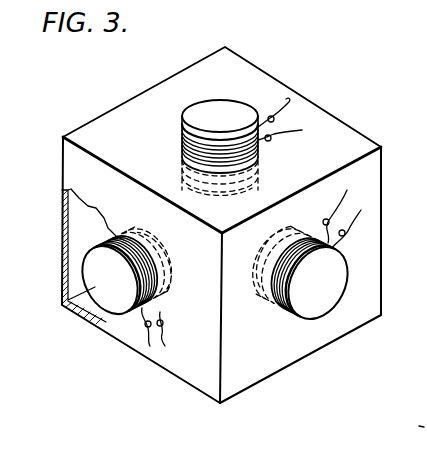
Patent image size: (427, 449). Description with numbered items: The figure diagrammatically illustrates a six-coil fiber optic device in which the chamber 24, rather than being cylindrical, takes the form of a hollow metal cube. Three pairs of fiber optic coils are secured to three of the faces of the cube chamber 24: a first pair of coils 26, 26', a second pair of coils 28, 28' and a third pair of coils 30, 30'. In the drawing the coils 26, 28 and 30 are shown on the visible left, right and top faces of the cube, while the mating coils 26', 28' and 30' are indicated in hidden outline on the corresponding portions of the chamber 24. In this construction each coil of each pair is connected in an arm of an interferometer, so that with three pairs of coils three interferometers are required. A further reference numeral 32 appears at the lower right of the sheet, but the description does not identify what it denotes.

The chamber 24 is at (185, 363).
The coil 26 is at (119, 293).
The coil 26' is at (147, 223).
The coil 28 is at (340, 259).
The coil 28' is at (278, 283).
The coil 30 is at (242, 135).
The coil 30' is at (250, 171).
The conduit 32 is at (409, 426).